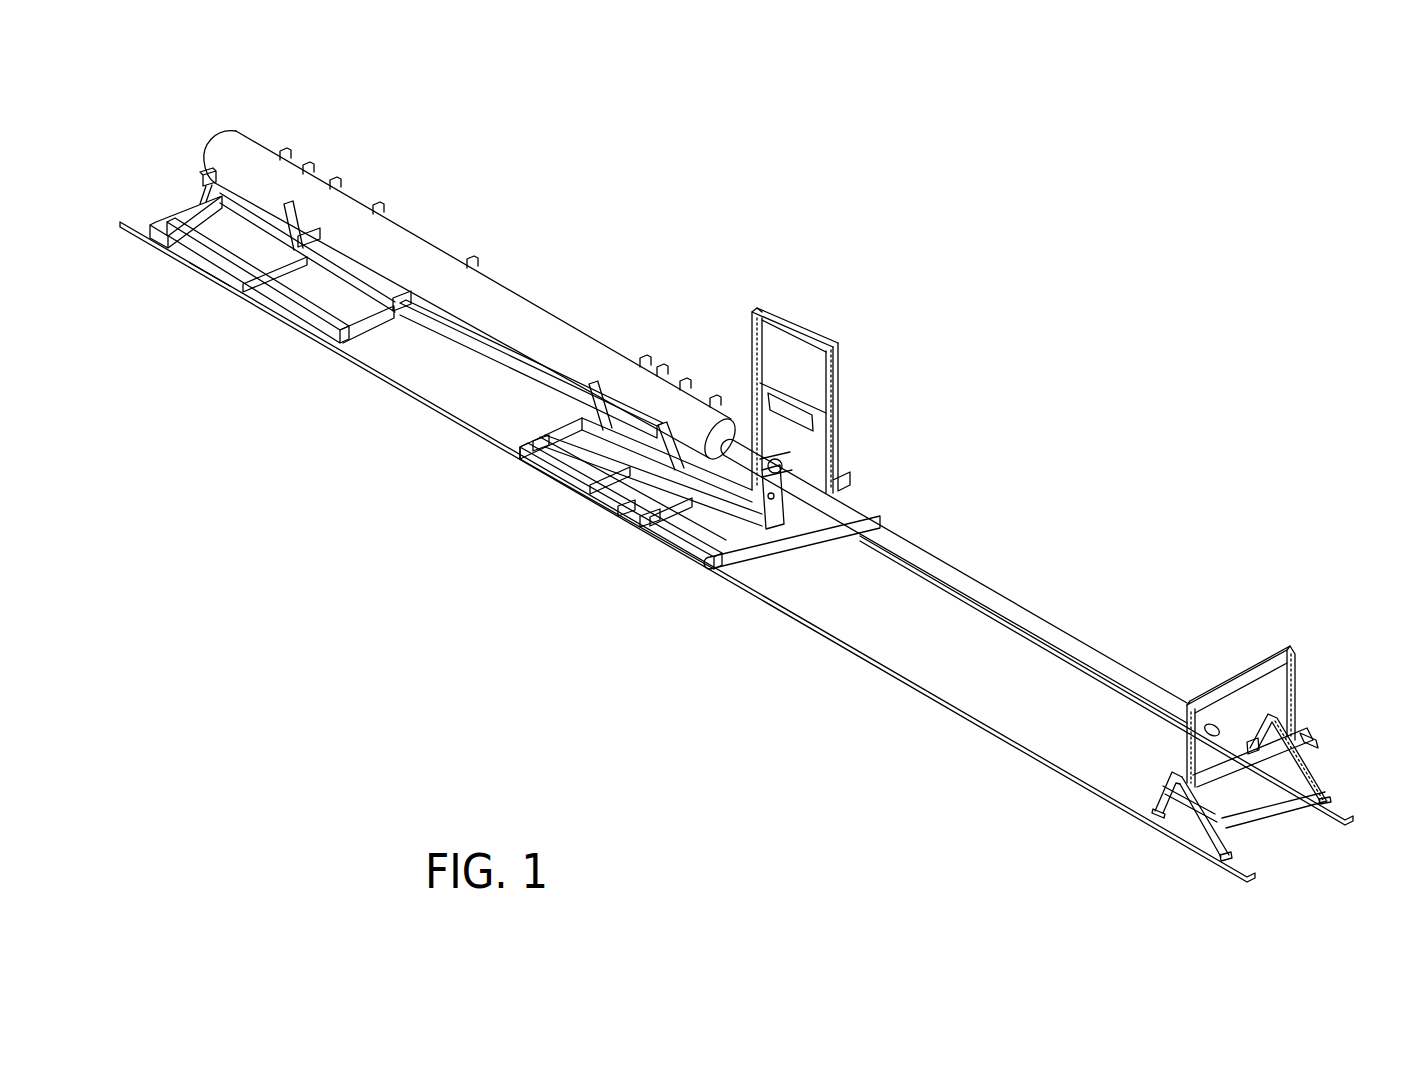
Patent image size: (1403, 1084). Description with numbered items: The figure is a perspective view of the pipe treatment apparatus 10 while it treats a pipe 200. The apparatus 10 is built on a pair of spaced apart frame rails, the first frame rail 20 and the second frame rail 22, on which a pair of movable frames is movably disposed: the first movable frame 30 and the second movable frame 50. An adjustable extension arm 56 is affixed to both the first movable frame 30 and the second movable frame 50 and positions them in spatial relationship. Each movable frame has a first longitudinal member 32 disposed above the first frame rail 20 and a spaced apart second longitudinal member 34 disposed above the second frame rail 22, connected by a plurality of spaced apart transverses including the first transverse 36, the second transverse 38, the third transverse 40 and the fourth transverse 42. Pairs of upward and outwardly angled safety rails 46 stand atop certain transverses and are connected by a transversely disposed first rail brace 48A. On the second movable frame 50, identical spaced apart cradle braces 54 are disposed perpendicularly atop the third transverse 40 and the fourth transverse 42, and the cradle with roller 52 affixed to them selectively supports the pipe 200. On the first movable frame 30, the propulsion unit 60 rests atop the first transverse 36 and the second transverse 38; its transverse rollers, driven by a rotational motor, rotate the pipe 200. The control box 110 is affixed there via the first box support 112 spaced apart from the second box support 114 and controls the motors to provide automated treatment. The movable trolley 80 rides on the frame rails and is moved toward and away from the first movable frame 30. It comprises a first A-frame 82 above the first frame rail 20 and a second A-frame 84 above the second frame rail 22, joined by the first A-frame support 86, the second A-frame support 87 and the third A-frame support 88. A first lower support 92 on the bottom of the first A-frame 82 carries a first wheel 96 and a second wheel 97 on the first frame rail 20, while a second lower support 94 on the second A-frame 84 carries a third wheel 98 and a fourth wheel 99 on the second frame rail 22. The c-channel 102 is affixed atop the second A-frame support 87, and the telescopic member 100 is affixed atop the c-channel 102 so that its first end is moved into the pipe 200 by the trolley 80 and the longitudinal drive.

The pipe treatment apparatus 10 is at (1017, 208).
The first frame rail 20 is at (1243, 873).
The second frame rail 22 is at (1347, 820).
The first movable frame 30 is at (617, 539).
The first longitudinal member 32 is at (323, 320).
The second longitudinal member 34 is at (810, 462).
The first transverse 36 is at (400, 313).
The second transverse 38 is at (303, 323).
The third transverse 40 is at (207, 288).
The fourth transverse 42 is at (170, 207).
The safety rails 46 is at (591, 378).
The first rail brace 48A is at (306, 228).
The second movable frame 50 is at (419, 367).
The cradle with roller 52 is at (200, 178).
The cradle braces 54 is at (203, 197).
The adjustable extension arm 56 is at (503, 370).
The propulsion unit 60 is at (785, 541).
The movable trolley 80 is at (1197, 730).
The first A-frame 82 is at (1162, 862).
The second A-frame 84 is at (1322, 762).
The first A-frame support 86 is at (1230, 747).
The second A-frame support 87 is at (1313, 736).
The third A-frame support 88 is at (1228, 822).
The first lower support 92 is at (1187, 834).
The second lower support 94 is at (1307, 784).
The first wheel 96 is at (1160, 826).
The second wheel 97 is at (1190, 902).
The third wheel 98 is at (1277, 774).
The fourth wheel 99 is at (1311, 800).
The telescopic member 100 is at (920, 552).
The c-channel 102 is at (1253, 747).
The control box 110 is at (852, 351).
The first box support 112 is at (753, 312).
The second box support 114 is at (835, 423).
The pipe 200 is at (541, 308).